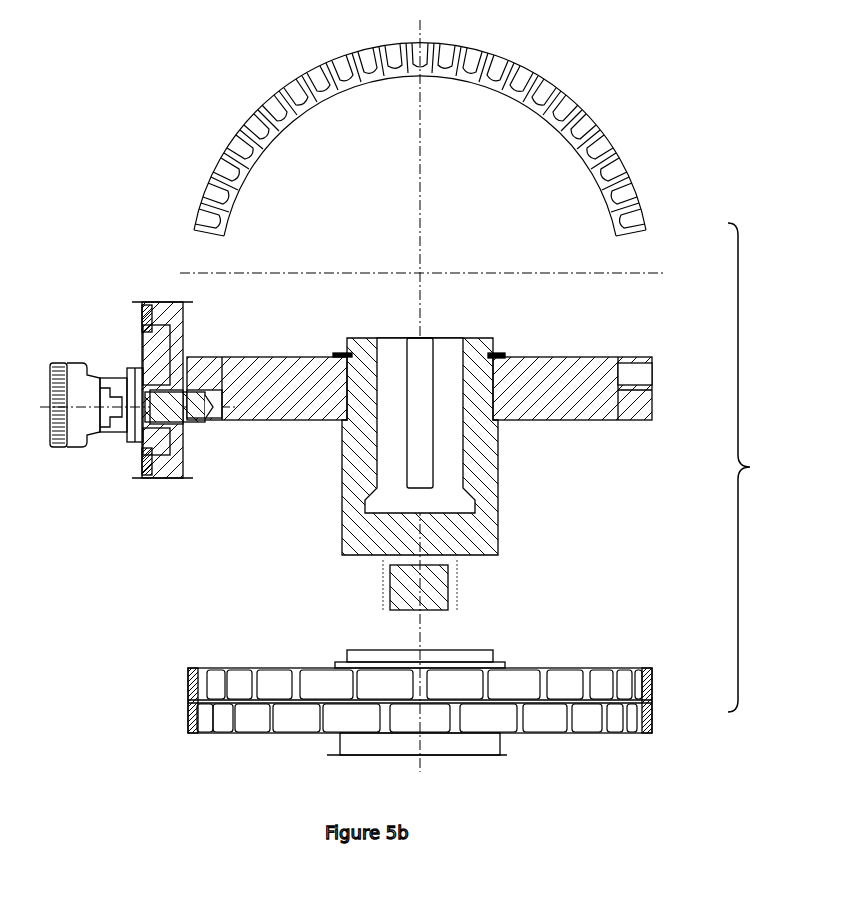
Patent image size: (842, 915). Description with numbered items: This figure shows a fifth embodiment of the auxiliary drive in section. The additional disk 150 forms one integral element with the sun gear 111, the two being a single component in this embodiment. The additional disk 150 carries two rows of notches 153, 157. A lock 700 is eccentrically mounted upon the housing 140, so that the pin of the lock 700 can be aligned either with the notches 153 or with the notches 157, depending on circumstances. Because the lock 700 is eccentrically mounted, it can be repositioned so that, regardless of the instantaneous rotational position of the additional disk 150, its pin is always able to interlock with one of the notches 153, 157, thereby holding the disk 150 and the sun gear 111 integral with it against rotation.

The lock 700 is at (78, 462).
The housing 140 is at (170, 472).
The additional disk 150 is at (280, 405).
The notches 153 is at (217, 420).
The notches 157 is at (638, 368).
The sun gear 111 is at (440, 590).